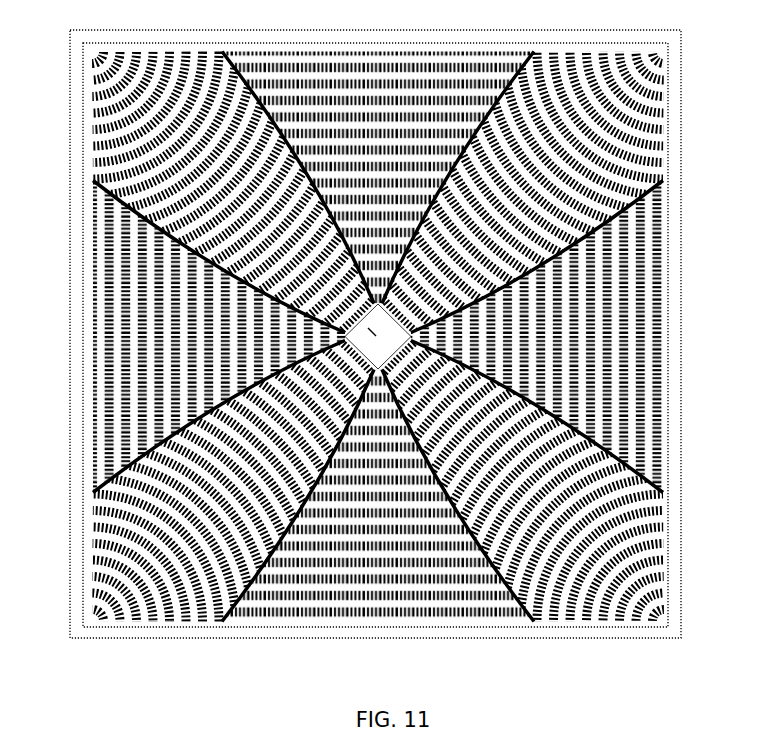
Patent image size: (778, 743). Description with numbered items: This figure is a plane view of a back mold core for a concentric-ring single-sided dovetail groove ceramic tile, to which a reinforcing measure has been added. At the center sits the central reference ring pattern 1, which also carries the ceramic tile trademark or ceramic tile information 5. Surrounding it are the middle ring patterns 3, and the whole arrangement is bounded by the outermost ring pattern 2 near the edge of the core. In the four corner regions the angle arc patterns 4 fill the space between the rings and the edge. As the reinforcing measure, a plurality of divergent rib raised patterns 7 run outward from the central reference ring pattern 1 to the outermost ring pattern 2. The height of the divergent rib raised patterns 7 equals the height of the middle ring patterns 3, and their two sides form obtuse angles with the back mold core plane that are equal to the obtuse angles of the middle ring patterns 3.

The central reference ring pattern 1 is at (400, 333).
The outermost ring pattern 2 is at (643, 382).
The middle ring pattern 3 is at (548, 328).
The angle arc pattern 4 is at (627, 90).
The ceramic tile trademark or ceramic tile information 5 is at (372, 333).
The divergent rib raised patterns 7 is at (600, 437).